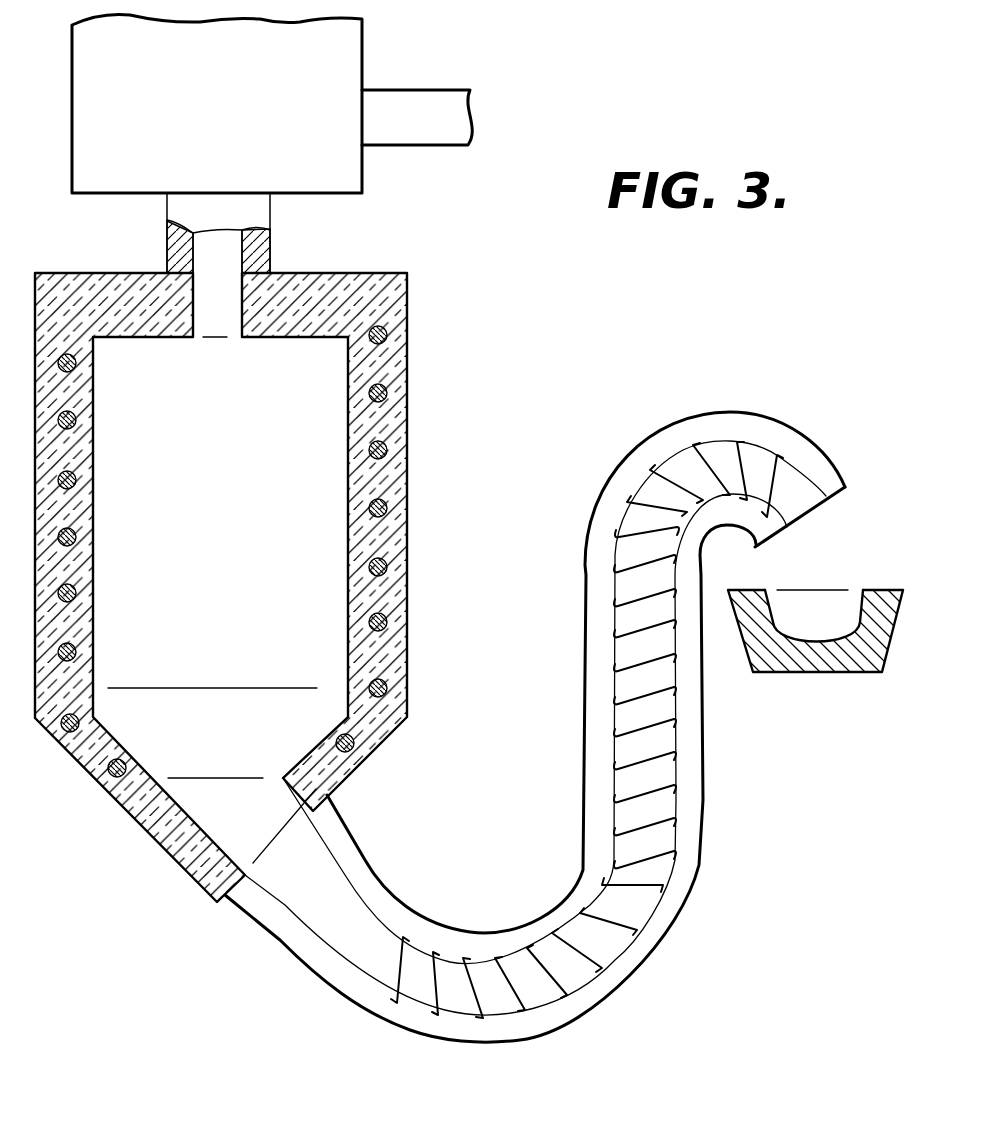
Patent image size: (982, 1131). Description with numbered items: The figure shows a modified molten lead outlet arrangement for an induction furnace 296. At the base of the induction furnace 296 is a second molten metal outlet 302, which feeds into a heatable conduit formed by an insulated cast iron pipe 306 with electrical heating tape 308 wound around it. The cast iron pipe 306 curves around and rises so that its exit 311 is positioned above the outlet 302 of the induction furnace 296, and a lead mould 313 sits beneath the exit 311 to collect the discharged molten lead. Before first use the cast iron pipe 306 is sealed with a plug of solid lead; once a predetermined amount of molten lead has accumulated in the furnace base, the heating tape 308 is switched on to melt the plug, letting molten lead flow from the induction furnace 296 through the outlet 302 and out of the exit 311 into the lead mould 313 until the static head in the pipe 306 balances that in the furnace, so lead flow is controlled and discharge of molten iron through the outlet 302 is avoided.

The induction furnace 296 is at (383, 369).
The second molten metal outlet 302 is at (222, 818).
The insulated cast iron pipe 306 is at (538, 990).
The electrical heating tape 308 is at (300, 935).
The exit 311 is at (805, 505).
The lead mould 313 is at (788, 657).